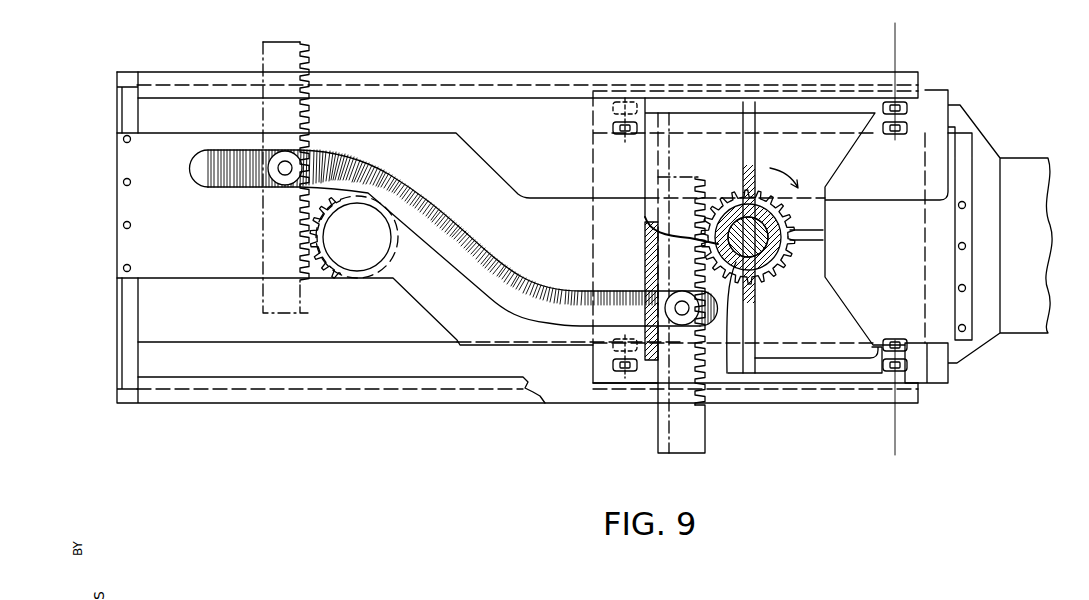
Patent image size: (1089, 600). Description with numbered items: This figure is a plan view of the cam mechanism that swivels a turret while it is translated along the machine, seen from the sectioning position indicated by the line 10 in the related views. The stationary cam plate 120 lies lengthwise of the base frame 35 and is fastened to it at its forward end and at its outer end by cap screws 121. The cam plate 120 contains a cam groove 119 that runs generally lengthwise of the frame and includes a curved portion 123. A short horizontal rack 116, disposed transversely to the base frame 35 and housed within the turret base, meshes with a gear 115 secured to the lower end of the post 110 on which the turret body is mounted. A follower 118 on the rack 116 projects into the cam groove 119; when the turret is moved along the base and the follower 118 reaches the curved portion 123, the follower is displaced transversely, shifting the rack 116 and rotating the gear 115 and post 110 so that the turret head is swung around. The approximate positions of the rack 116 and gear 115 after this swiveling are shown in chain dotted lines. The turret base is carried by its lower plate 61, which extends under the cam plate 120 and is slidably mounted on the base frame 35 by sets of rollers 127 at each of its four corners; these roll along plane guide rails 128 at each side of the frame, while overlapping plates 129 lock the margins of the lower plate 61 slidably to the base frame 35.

The section line 10- 10 is at (868, 437).
The base frame 35 is at (122, 352).
The lower plate 61 is at (600, 184).
The post 110 is at (761, 263).
The gear 115 is at (392, 262).
The rack 116 is at (302, 48).
The follower 118 is at (270, 181).
The cam groove 119 is at (524, 314).
The cam plate 120 is at (433, 312).
The cap screws 121 is at (124, 268).
The curved portion 123 is at (475, 234).
The sets of rollers 127 is at (616, 126).
The guide rails 128 is at (482, 105).
The plates 129 is at (400, 82).